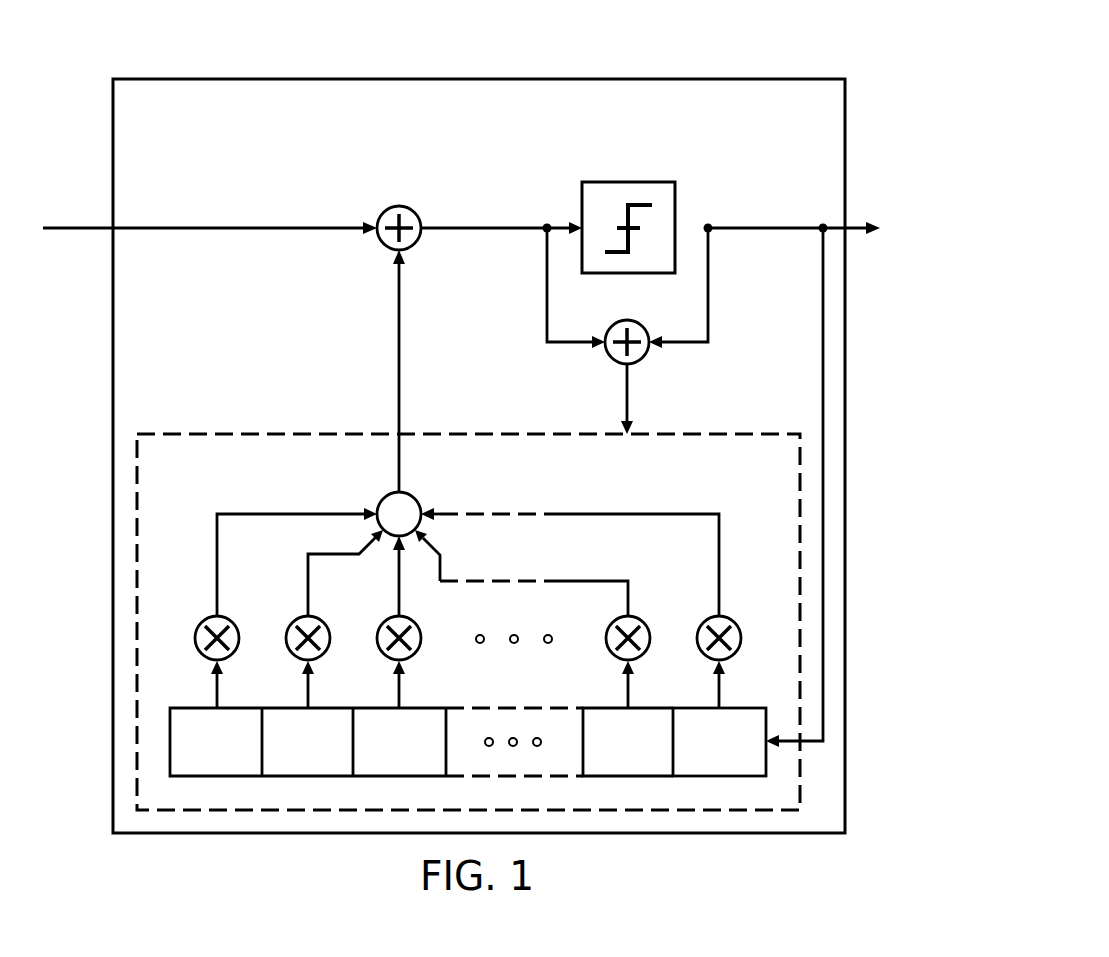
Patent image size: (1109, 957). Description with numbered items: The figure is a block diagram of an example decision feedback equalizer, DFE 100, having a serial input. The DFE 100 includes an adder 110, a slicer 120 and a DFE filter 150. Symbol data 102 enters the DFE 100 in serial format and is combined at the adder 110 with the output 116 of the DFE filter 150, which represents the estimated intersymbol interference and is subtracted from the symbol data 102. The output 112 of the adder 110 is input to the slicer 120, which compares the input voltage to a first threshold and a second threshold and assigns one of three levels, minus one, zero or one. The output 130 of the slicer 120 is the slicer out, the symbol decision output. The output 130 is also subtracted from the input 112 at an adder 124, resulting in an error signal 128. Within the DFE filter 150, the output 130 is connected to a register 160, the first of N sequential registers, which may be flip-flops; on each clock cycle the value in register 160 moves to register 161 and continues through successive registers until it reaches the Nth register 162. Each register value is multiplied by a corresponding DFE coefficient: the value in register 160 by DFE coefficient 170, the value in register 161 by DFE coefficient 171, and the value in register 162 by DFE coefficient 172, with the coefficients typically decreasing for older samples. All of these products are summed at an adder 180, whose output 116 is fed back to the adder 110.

The DFE 100 is at (326, 72).
The symbol data 102 is at (79, 228).
The adder 110 is at (383, 208).
The output of adder 110 112 is at (544, 223).
The slicer 120 is at (640, 182).
The adder 124 is at (611, 361).
The error signal 128 is at (630, 397).
The output of slicer 120 130 is at (819, 225).
The output of DFE filter 150 116 is at (398, 352).
The DFE filter 150 is at (246, 425).
The adder 180 is at (380, 498).
The DFE coefficient 170 is at (731, 617).
The DFE coefficient 171 is at (640, 617).
The DFE coefficient 172 is at (206, 617).
The register 160 is at (697, 756).
The register 161 is at (606, 756).
The register 162 is at (194, 756).